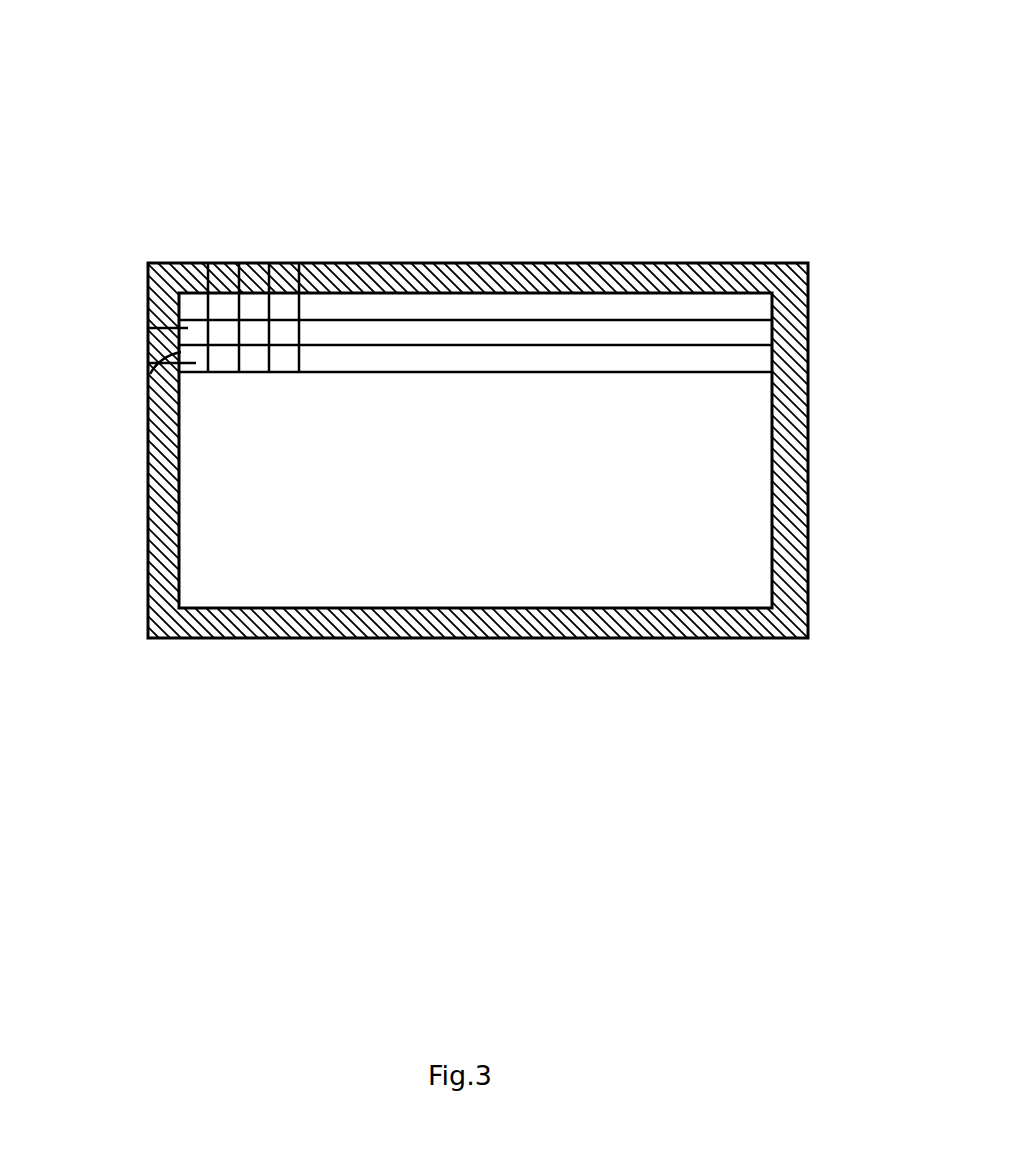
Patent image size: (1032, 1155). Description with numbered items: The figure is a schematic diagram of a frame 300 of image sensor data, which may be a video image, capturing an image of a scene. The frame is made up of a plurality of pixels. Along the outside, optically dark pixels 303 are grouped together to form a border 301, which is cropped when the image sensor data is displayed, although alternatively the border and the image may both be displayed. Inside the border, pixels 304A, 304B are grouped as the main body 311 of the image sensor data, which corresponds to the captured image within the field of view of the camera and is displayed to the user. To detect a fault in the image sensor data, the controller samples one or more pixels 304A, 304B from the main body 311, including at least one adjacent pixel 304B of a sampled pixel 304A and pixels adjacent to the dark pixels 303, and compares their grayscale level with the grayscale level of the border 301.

The frame 300 is at (214, 58).
The border 301 is at (808, 452).
The pixels 303 is at (284, 280).
The pixel 304A is at (148, 420).
The pixel 304B is at (148, 323).
The main body 311 is at (427, 585).